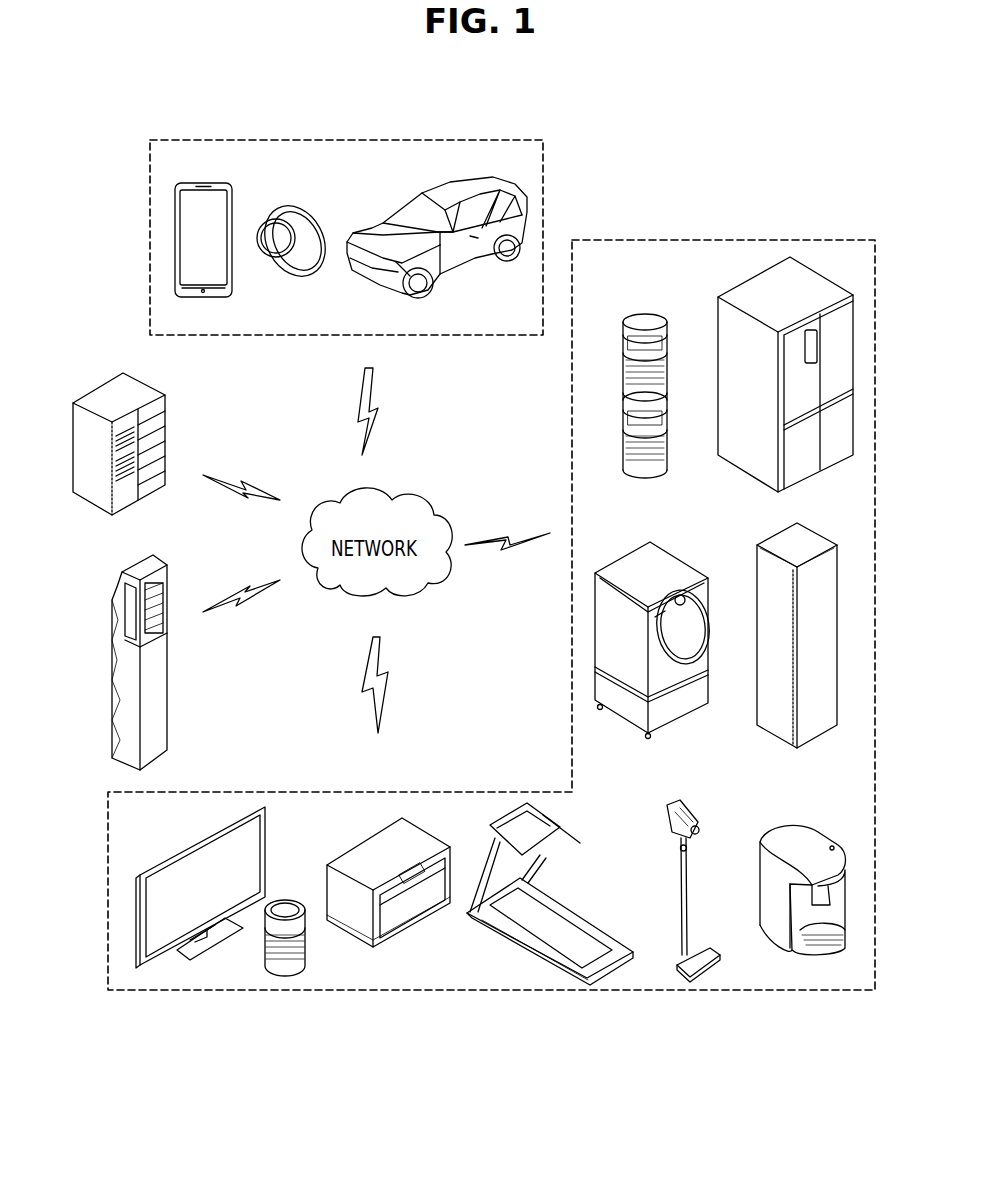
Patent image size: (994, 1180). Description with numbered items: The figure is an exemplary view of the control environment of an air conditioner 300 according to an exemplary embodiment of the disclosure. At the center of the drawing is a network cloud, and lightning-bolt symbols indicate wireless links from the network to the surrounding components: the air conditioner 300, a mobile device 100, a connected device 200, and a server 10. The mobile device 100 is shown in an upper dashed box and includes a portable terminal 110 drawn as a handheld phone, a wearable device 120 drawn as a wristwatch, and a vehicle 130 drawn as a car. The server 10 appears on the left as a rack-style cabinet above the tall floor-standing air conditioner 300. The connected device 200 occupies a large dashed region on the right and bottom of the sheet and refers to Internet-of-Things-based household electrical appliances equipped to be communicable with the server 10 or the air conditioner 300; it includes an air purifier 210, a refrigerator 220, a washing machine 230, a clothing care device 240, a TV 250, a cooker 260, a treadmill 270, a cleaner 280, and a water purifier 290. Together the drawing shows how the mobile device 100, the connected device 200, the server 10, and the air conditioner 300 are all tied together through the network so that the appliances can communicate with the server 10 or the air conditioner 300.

The server 10 is at (72, 447).
The mobile device 100 is at (392, 139).
The portable terminal 110 is at (204, 182).
The wearable device 120 is at (294, 204).
The vehicle 130 is at (462, 180).
The connected device 200 is at (730, 239).
The air purifier 210 is at (621, 420).
The refrigerator 220 is at (854, 345).
The washing machine 230 is at (594, 637).
The clothing care device 240 is at (838, 637).
The TV 250 is at (205, 954).
The cooker 260 is at (400, 942).
The treadmill 270 is at (540, 957).
The cleaner 280 is at (692, 980).
The water purifier 290 is at (818, 962).
The air conditioner 300 is at (112, 656).